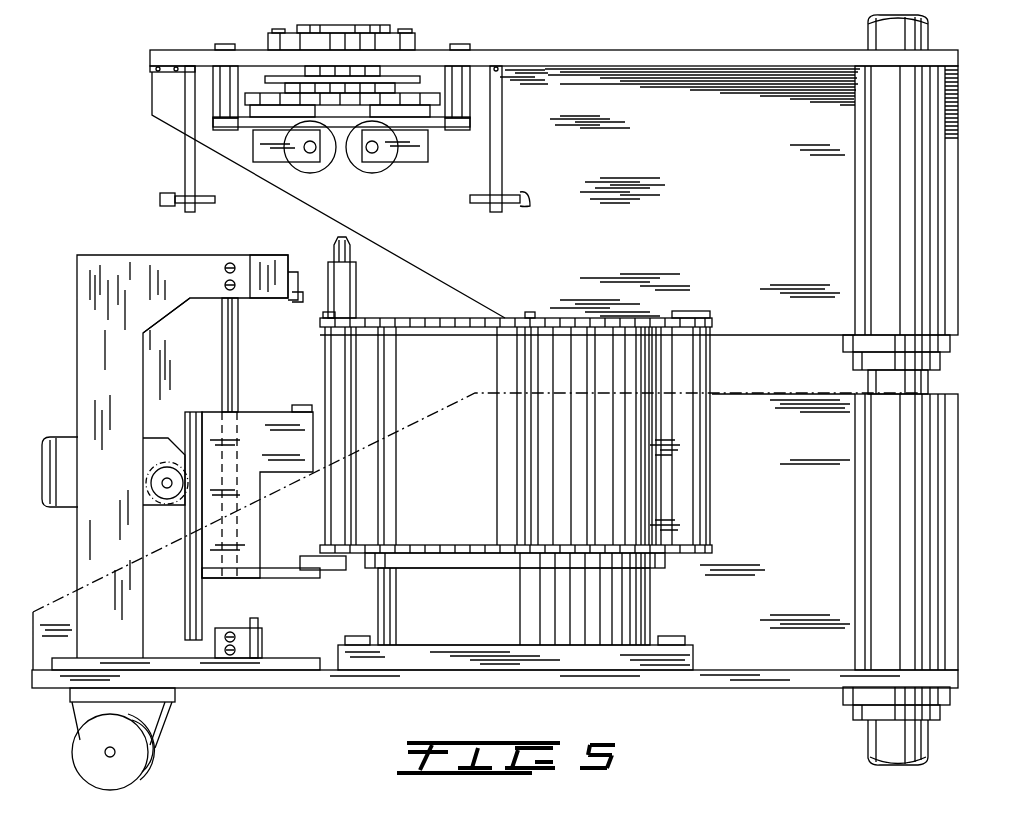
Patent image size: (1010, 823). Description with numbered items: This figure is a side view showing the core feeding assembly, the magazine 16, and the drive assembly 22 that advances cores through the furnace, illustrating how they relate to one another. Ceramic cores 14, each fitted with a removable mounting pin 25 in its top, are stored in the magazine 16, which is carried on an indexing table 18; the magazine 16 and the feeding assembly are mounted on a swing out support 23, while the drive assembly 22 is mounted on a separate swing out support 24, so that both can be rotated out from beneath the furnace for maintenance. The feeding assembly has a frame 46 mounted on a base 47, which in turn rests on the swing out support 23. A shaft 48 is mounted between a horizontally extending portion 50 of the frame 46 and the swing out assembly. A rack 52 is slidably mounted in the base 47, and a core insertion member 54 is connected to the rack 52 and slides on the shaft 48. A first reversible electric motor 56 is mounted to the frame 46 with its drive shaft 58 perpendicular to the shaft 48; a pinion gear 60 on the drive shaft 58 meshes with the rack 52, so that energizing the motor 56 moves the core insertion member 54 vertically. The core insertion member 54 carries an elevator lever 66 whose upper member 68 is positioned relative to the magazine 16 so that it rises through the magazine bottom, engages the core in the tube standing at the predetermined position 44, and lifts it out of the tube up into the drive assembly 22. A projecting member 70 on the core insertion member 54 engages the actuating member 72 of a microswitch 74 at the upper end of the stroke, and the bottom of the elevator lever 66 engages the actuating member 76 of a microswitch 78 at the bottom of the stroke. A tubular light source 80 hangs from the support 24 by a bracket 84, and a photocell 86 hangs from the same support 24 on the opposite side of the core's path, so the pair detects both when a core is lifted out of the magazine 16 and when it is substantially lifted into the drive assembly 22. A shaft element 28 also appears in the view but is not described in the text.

The ceramic cores 14 is at (356, 290).
The magazine 16 is at (458, 481).
The indexing table 18 is at (650, 610).
The drive assembly 22 is at (396, 198).
The swing out support 23 is at (222, 692).
The swing out support 24 is at (770, 58).
The removable mounting pins 25 is at (334, 248).
The shaft 28 is at (935, 388).
The predetermined position 44 is at (373, 321).
The frame 46 is at (85, 345).
The base 47 is at (62, 666).
The shaft 48 is at (240, 378).
The horizontally extending portion 50 is at (183, 307).
The rack 52 is at (187, 628).
The core insertion member 54 is at (245, 428).
The first reversible electric motor 56 is at (65, 502).
The drive shaft 58 is at (167, 500).
The pinion gear 60 is at (150, 470).
The elevator lever 66 is at (316, 590).
The upper member 68 is at (305, 560).
The projecting member 70 is at (300, 405).
The actuating member 72 is at (298, 302).
The microswitch 74 is at (270, 292).
The actuating member 76 is at (256, 625).
The microswitch 78 is at (263, 650).
The tubular light source 80 is at (210, 206).
The bracket 84 is at (185, 158).
The photocell 86 is at (480, 206).